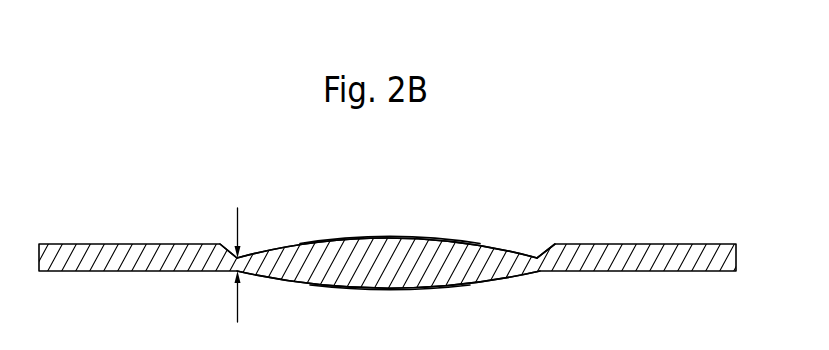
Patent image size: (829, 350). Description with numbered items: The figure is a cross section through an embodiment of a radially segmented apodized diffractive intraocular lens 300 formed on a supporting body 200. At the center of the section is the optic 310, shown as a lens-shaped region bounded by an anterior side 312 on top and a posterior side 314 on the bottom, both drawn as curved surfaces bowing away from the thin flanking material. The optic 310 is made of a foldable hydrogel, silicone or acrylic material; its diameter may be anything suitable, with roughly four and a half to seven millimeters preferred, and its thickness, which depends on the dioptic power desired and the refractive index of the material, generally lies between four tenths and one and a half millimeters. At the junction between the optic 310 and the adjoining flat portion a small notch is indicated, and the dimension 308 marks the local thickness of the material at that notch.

The substrate 200 is at (655, 211).
The lens structure 300 is at (512, 156).
The groove thickness dimension 308 is at (237, 220).
The optic 310 is at (483, 240).
The anterior side 312 is at (390, 237).
The posterior side 314 is at (425, 288).